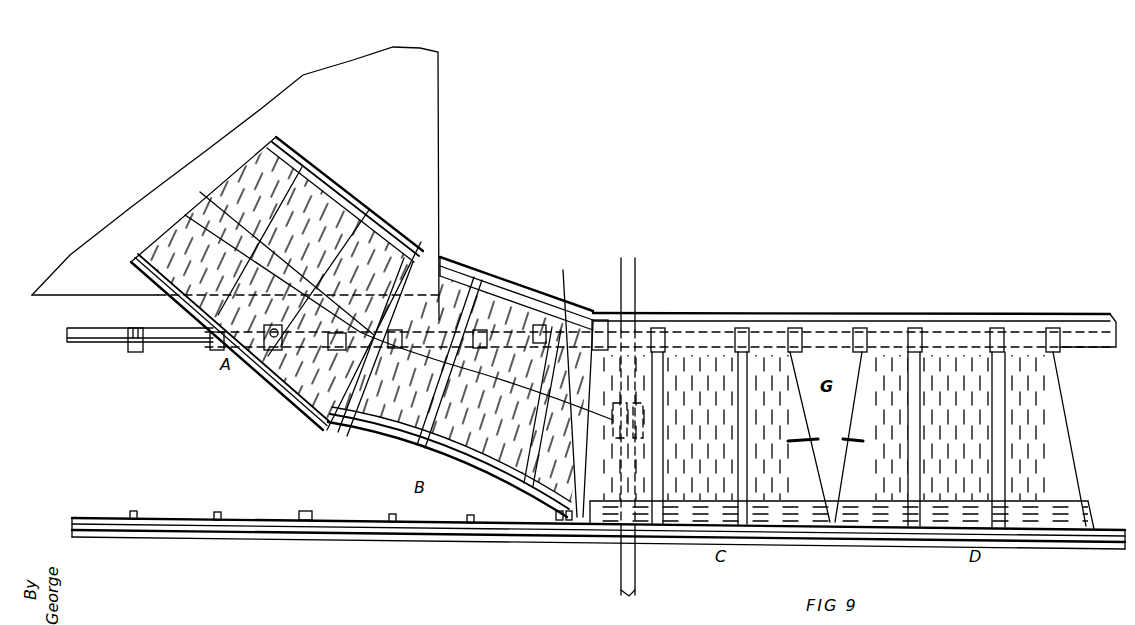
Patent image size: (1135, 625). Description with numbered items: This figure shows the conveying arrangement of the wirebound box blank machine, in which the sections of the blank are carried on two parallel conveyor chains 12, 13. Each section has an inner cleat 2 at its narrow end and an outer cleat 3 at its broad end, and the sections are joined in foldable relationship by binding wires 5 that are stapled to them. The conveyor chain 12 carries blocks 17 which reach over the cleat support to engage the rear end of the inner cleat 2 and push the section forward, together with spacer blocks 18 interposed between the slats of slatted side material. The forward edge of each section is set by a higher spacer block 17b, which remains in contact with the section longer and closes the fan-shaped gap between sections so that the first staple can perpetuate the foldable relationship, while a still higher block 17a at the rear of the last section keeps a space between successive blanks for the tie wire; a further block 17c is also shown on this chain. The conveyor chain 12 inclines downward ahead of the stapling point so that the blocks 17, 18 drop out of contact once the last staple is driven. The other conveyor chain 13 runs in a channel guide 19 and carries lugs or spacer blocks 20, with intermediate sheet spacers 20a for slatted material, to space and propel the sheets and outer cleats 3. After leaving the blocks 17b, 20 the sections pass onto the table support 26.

The inner cleat 2 is at (408, 234).
The outer cleat 3 is at (1088, 508).
The binding wires 5 is at (274, 133).
The conveyor chain 12 is at (508, 293).
The conveyor chain 13 is at (72, 527).
The blocks 17 is at (541, 330).
The high block 17a is at (1058, 330).
The spacer block 17b is at (859, 330).
The vertical strut 17c is at (593, 318).
The spacer blocks 18 is at (134, 355).
The channel guide 19 is at (90, 536).
The lugs or spacer blocks 20 is at (305, 511).
The intermediate sheet spacers 20a is at (133, 511).
The table support 26 is at (425, 114).